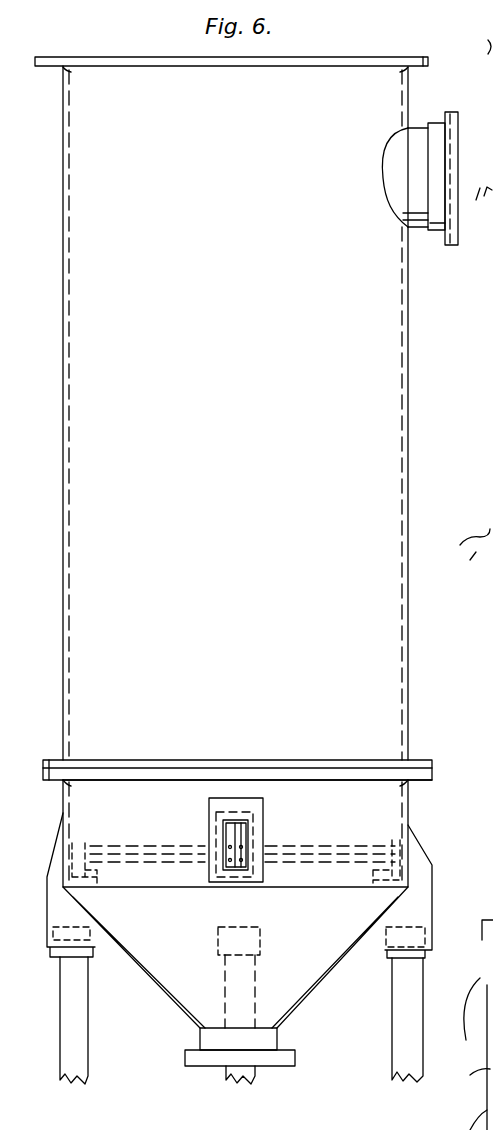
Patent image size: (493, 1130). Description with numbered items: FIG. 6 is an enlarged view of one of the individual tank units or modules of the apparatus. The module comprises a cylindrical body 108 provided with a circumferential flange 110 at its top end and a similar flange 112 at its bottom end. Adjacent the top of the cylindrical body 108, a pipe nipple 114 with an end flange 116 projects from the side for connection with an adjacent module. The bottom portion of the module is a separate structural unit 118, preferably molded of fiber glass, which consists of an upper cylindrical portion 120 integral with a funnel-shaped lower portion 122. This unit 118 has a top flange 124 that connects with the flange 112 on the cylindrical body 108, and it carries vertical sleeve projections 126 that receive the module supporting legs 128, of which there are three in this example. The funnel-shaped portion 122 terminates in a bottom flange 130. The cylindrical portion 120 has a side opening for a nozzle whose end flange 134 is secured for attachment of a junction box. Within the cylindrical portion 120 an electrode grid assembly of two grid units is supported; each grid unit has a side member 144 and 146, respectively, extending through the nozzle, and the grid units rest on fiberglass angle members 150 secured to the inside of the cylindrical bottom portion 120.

The cylindrical body 108 is at (229, 552).
The circumferential flange 110 is at (434, 40).
The flange 112 is at (413, 759).
The pipe nipple 114 is at (410, 227).
The end flange 116 is at (475, 98).
The structural unit 118 is at (336, 987).
The upper cylindrical portion 120 is at (385, 800).
The funnel-shaped lower portion 122 is at (282, 977).
The top flange 124 is at (129, 780).
The vertical sleeve projections 126 is at (77, 913).
The module supporting legs 128 is at (88, 1052).
The bottom flange 130 is at (203, 1062).
The end flange 134 is at (254, 819).
The side member 144 is at (243, 834).
The side member 146 is at (227, 833).
The fiberglass angle members 150 is at (100, 885).